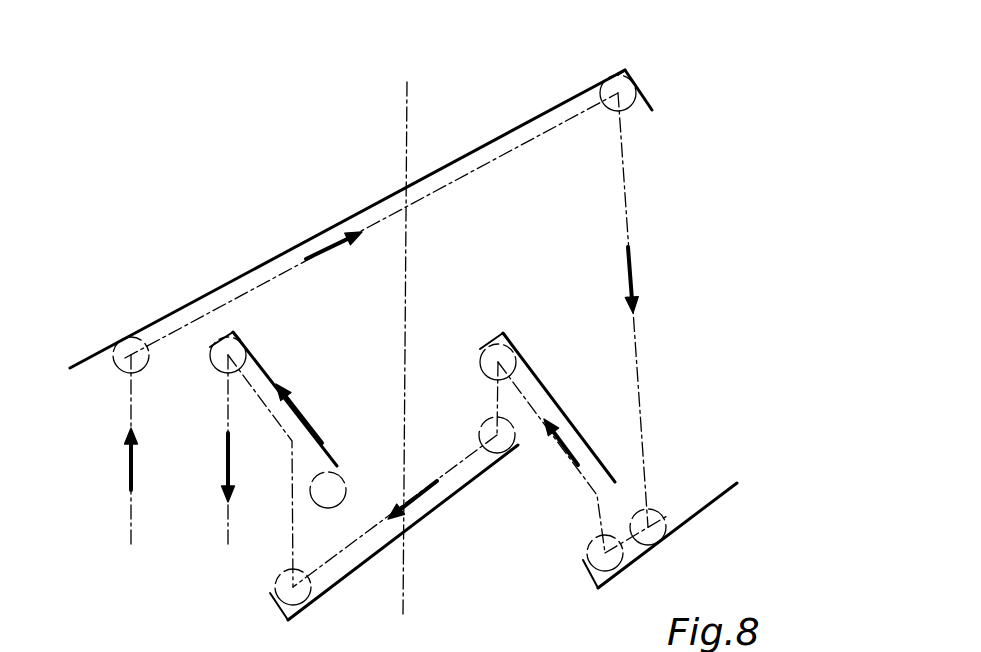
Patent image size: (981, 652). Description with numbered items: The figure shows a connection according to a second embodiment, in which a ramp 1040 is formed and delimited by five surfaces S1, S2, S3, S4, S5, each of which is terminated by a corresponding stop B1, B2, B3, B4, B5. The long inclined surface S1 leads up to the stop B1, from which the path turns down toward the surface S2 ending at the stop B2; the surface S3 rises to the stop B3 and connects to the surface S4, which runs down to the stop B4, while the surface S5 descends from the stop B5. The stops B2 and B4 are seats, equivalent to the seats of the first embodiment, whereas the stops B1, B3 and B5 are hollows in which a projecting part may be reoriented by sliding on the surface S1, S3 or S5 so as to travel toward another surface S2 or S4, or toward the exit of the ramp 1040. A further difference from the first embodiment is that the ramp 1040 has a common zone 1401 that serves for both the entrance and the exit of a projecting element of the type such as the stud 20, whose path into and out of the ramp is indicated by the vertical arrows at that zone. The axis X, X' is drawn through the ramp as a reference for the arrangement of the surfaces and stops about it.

The ramp 1040 is at (139, 133).
The stud 20 is at (131, 336).
The common zone 1401 is at (247, 568).
The stop B1 is at (603, 84).
The stop B2 is at (593, 553).
The stop B3 is at (479, 349).
The stop B4 is at (280, 594).
The stop B5 is at (244, 349).
The surface S1 is at (516, 138).
The surface S2 is at (715, 498).
The surface S3 is at (558, 405).
The surface S4 is at (458, 490).
The surface S5 is at (321, 441).
The section axis X is at (413, 486).
The section axis X' is at (417, 216).